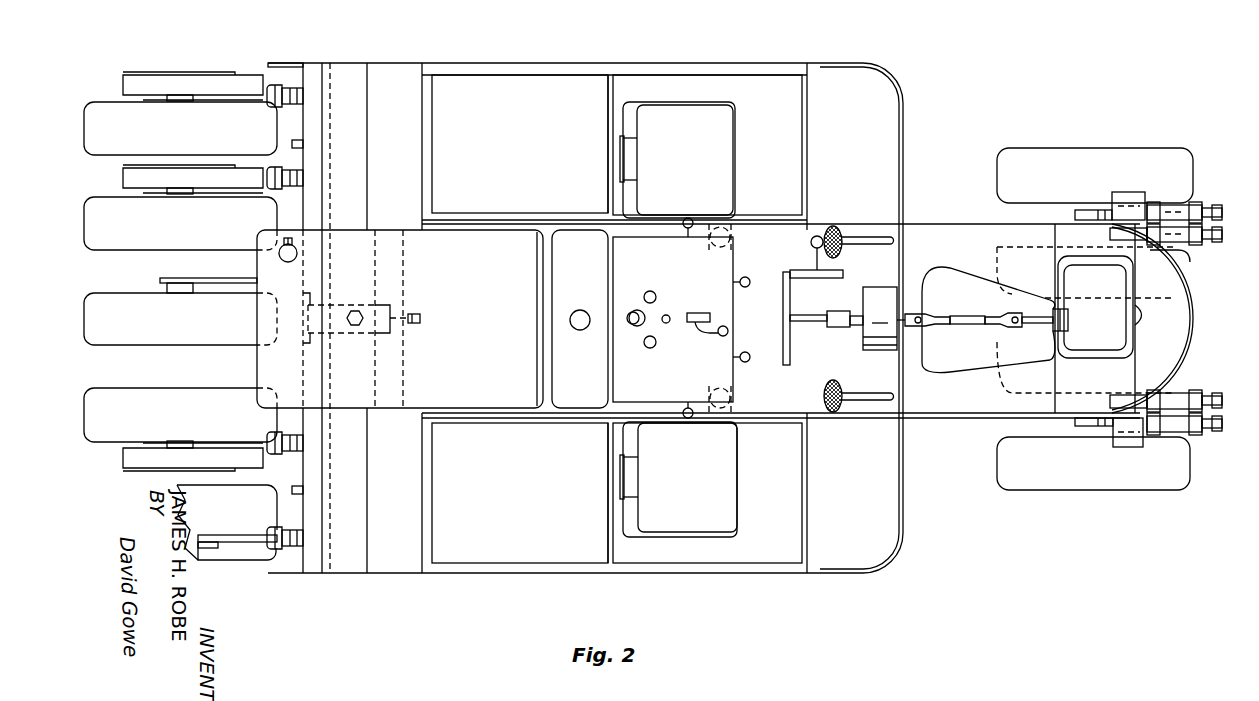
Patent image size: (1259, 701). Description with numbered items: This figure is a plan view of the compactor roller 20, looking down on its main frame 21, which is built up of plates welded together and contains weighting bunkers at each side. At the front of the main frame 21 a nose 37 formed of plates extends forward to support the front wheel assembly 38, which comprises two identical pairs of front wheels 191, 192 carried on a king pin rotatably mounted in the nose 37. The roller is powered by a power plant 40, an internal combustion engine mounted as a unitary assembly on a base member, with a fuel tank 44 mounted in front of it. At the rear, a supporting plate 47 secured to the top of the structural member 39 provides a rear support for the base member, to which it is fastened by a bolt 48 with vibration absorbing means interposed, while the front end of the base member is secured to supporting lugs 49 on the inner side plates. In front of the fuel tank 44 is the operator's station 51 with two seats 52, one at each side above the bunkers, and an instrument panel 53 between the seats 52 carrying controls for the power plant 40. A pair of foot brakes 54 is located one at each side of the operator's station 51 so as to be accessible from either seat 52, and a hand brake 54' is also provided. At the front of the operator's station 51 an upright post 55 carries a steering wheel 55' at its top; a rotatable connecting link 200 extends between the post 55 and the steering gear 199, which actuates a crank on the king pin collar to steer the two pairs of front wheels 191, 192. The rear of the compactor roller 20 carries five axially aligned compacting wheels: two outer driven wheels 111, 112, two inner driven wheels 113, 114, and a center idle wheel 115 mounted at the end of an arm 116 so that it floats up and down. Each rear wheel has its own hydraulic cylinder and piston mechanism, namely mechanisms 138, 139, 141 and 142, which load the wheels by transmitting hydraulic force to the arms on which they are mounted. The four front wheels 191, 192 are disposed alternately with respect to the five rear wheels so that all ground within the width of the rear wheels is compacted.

The compactor roller 20 is at (926, 201).
The main frame 21 is at (558, 60).
The nose 37 is at (1190, 263).
The front wheel assembly 38 is at (1201, 187).
The structural member 39 is at (404, 370).
The power plant 40 is at (493, 312).
The fuel tank 44 is at (582, 283).
The supporting plate 47 is at (362, 334).
The bolt 48 is at (353, 310).
The supporting lugs 49 is at (711, 243).
The operator's station 51 is at (757, 185).
The seats 52 is at (718, 158).
The instrument panel 53 is at (693, 272).
The foot brakes 54 is at (859, 325).
The hand brake 54' is at (789, 248).
The upright post 55 is at (909, 291).
The steering wheel 55' is at (805, 336).
The outer driven wheel 111 is at (103, 110).
The outer driven wheel 112 is at (238, 523).
The inner driven wheel 113 is at (103, 207).
The inner driven wheel 114 is at (108, 395).
The center idle wheel 115 is at (105, 300).
The arm 116 is at (218, 279).
The hydraulic cylinder and piston mechanism 138 is at (289, 80).
The hydraulic cylinder and piston mechanism 139 is at (288, 180).
The hydraulic cylinder and piston mechanism 141 is at (293, 457).
The hydraulic cylinder and piston mechanism 142 is at (287, 550).
The front wheels 191 is at (1175, 153).
The front wheels 192 is at (1187, 277).
The steering gear 199 is at (1086, 318).
The connecting link 200 is at (997, 324).